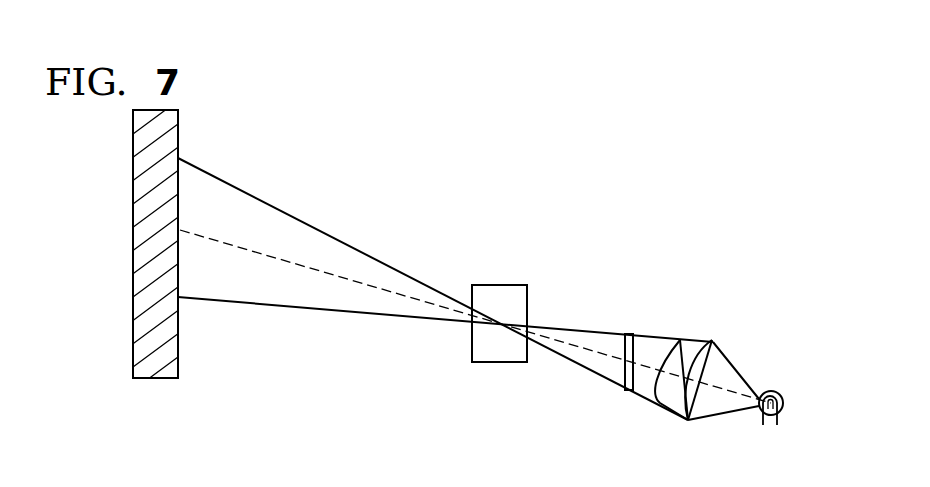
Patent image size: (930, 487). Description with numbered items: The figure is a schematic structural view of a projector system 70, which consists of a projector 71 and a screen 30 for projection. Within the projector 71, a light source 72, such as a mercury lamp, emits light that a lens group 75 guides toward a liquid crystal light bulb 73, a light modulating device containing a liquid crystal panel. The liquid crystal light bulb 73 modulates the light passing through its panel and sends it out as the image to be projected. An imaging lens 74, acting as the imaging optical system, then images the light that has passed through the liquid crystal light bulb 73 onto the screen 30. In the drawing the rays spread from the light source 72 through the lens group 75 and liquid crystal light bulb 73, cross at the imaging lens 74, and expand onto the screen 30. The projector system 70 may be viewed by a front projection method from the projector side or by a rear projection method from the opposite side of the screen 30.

The screen for projection 30 is at (166, 371).
The projector system 70 is at (556, 245).
The projector 71 is at (660, 320).
The light source 72 is at (785, 403).
The liquid crystal light bulb 73 is at (628, 390).
The imaging lens 74 is at (502, 362).
The lens group 75 is at (675, 403).